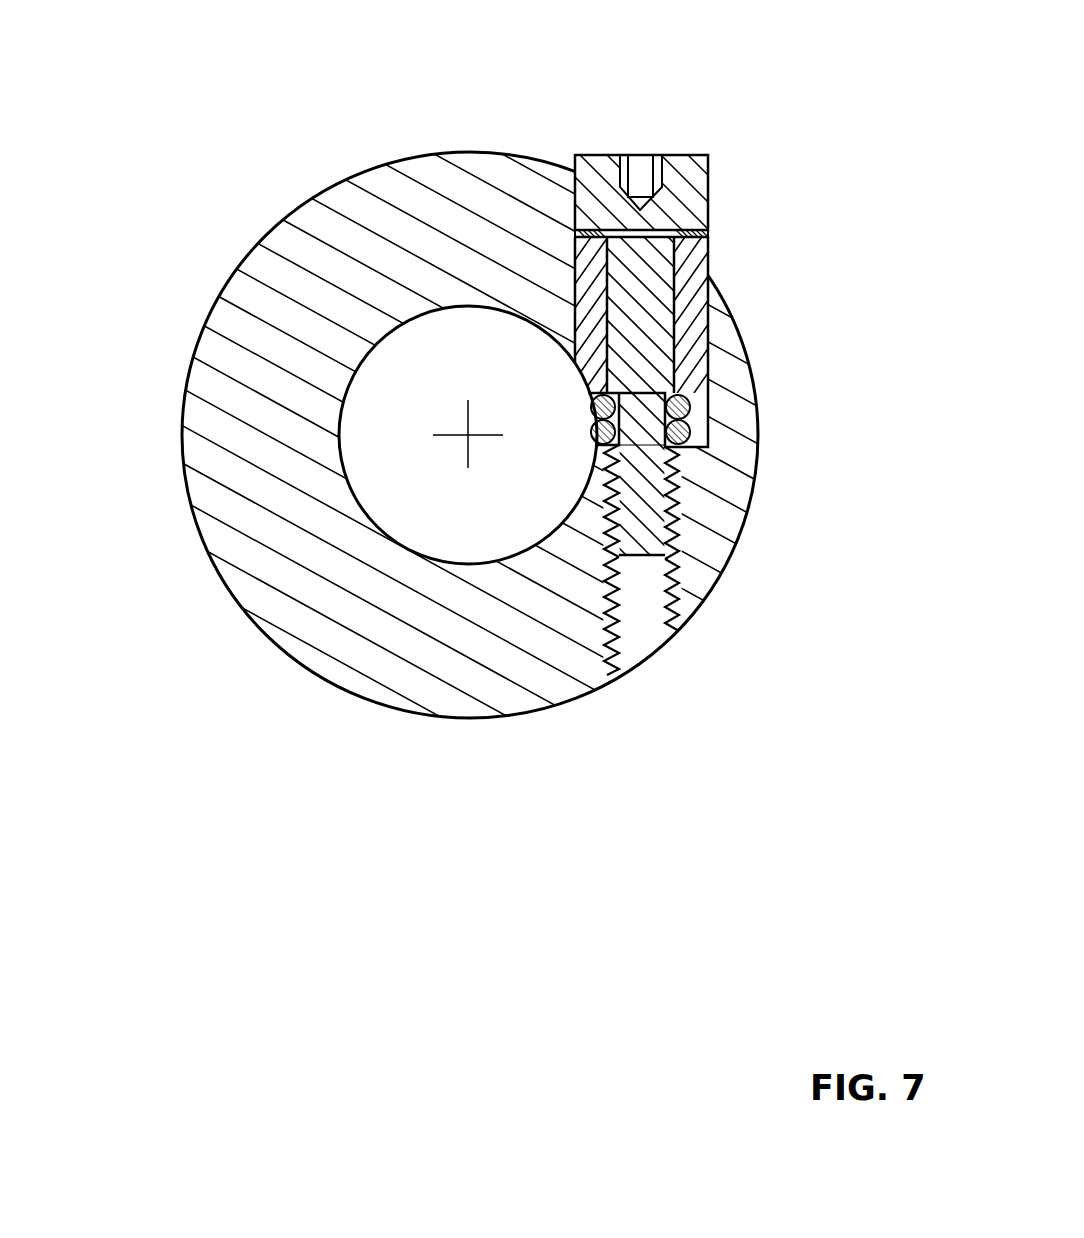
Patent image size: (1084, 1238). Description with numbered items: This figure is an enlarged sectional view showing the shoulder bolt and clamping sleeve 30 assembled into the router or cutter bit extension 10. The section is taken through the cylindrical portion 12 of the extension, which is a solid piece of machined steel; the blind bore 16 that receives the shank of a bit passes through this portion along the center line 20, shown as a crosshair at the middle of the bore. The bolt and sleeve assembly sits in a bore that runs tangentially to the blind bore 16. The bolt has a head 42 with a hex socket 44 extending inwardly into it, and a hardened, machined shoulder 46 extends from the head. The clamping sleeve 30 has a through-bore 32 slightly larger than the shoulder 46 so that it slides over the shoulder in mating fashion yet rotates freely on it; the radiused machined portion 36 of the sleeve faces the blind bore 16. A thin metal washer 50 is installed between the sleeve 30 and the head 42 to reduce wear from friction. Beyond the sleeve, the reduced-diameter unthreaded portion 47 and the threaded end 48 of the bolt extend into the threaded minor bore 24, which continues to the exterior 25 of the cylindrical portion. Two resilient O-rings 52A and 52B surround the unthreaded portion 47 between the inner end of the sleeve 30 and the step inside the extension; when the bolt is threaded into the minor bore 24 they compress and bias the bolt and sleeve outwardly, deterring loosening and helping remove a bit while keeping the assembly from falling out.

The router or cutter bit extension 10 is at (468, 113).
The cylindrical portion 12 is at (323, 226).
The blind bore 16 is at (343, 442).
The center line 20 is at (452, 442).
The machined portion 36 is at (582, 378).
The clamping sleeve 30 is at (728, 266).
The head 42 is at (713, 202).
The hex socket 44 is at (657, 176).
The thin metal washer 50 is at (708, 233).
The shoulder 46 is at (645, 325).
The through-bore 32 is at (675, 346).
The unthreaded portion 47 is at (640, 415).
The threaded end 48 is at (640, 483).
The exterior 25 is at (612, 648).
The minor bore 24 is at (672, 590).
The O-ring 52A is at (590, 433).
The O-ring 52B is at (594, 408).